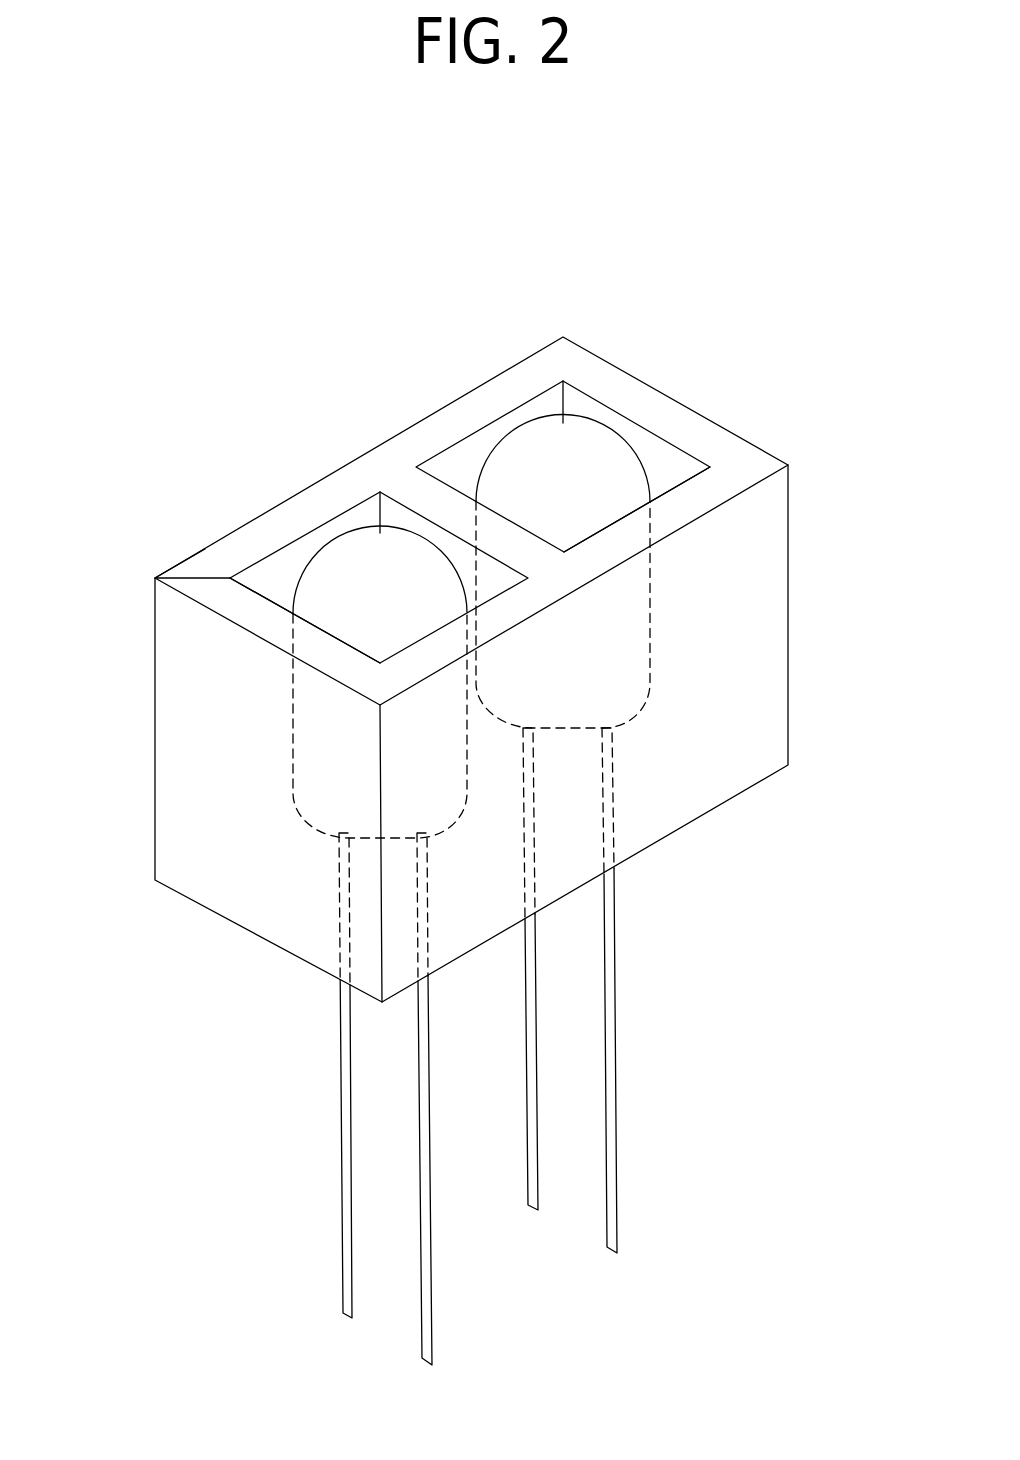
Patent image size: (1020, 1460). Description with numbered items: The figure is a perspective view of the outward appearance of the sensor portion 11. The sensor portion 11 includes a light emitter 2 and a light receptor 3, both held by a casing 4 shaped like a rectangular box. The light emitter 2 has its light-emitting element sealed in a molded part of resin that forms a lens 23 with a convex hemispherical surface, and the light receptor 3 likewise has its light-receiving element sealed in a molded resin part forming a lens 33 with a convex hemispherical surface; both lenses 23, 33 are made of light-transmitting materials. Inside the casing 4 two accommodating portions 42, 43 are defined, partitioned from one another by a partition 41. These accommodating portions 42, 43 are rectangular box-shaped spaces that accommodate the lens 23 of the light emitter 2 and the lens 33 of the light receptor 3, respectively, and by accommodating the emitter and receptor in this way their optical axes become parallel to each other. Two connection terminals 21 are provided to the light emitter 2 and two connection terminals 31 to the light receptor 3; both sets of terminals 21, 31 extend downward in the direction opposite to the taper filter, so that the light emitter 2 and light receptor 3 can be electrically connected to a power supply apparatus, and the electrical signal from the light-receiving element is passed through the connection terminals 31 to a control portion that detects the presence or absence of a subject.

The sensor portion 11 is at (610, 312).
The light emitter 2 is at (508, 460).
The light receptor 3 is at (353, 553).
The casing 4 is at (183, 707).
The partition 41 is at (410, 523).
The accommodating portion 42 is at (537, 415).
The accommodating portion 43 is at (268, 563).
The lens 33 is at (268, 577).
The lens 23 is at (610, 462).
The connection terminals 31 is at (420, 1215).
The connection terminals 21 is at (540, 1128).